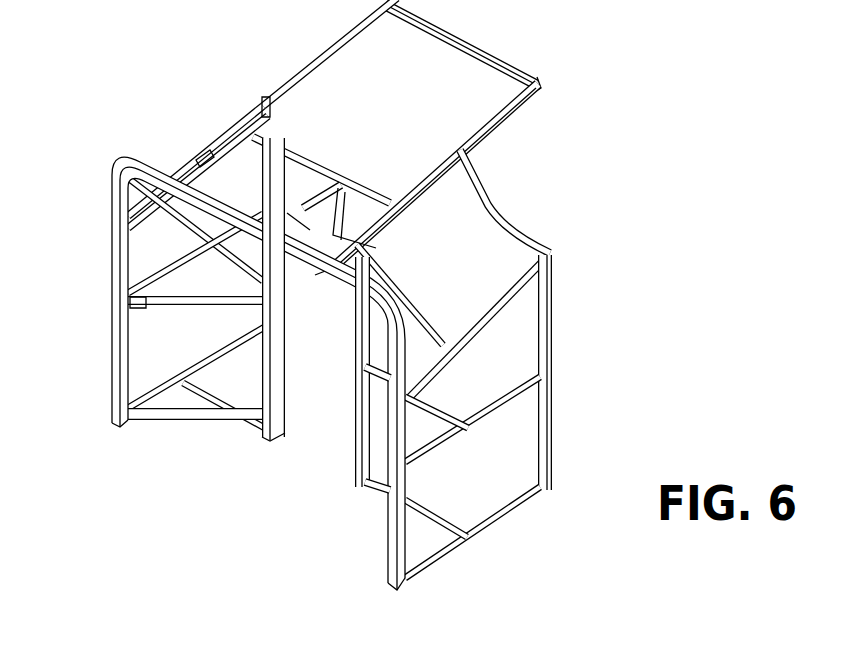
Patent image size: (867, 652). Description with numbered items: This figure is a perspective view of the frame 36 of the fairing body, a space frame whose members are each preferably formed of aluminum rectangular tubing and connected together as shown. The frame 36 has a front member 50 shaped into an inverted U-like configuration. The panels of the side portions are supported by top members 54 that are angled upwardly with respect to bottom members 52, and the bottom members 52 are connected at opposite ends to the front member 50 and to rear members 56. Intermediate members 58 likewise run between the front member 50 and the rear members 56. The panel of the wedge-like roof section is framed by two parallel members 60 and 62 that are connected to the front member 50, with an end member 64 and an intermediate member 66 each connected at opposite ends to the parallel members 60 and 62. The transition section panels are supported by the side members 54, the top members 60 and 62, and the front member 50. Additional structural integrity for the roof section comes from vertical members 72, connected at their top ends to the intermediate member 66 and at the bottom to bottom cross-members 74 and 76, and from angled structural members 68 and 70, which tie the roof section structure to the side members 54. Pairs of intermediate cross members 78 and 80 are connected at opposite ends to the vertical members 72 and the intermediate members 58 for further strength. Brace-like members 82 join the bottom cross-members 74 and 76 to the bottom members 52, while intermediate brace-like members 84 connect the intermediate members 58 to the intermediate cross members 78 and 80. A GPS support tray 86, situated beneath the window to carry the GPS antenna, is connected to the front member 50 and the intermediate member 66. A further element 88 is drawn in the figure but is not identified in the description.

The frame 36 is at (652, 245).
The front member 50 is at (388, 548).
The bottom members 52 is at (160, 390).
The top members 54 is at (190, 168).
The rear members 56 is at (262, 280).
The intermediate members 58 is at (162, 273).
The parallel member 60 is at (335, 50).
The parallel member 62 is at (520, 118).
The end member 64 is at (500, 52).
The intermediate member 66 is at (308, 163).
The angled structural member 68 is at (208, 152).
The angled structural member 70 is at (292, 82).
The vertical members 72 is at (285, 412).
The bottom cross-member 74 is at (262, 425).
The bottom cross-member 76 is at (433, 513).
The intermediate cross member 78 is at (240, 310).
The intermediate cross member 80 is at (437, 410).
The brace-like members 82 is at (175, 425).
The intermediate brace-like members 84 is at (142, 307).
The GPS support tray 86 is at (324, 285).
The hinge bracket 88 is at (298, 212).